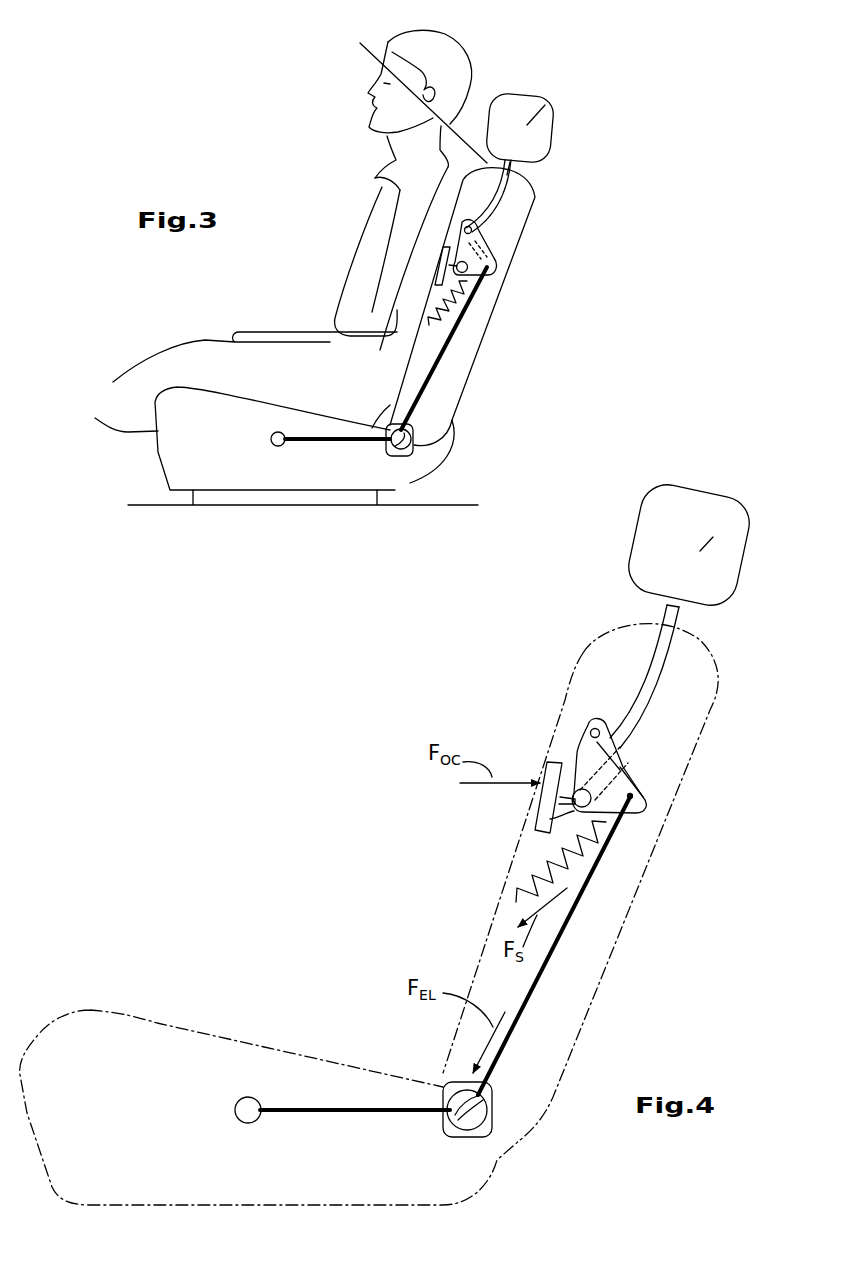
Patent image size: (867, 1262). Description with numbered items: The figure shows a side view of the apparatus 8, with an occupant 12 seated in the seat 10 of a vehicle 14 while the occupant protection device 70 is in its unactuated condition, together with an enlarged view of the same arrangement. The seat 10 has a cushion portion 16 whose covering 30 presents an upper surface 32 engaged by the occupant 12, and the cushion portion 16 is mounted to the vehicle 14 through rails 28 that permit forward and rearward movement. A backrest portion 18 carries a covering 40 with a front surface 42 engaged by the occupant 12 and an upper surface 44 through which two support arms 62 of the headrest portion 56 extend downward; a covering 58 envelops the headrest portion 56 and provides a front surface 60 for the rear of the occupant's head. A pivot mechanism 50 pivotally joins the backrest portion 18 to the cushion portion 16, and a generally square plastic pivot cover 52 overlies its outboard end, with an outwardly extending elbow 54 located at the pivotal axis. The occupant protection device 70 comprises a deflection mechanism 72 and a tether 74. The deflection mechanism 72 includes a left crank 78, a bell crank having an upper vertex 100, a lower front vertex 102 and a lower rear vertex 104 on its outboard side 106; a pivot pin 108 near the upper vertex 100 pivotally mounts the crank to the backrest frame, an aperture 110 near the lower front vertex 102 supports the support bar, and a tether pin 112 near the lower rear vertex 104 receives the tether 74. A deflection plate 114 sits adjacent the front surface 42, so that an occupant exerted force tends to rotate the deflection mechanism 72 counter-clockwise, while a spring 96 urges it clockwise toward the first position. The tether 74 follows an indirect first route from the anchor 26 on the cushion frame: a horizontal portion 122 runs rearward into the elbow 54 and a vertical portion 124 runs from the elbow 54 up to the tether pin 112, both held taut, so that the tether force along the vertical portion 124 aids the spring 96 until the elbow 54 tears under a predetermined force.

In FIG. 3, the apparatus 8 is at (626, 141).
In FIG. 4, the apparatus 8 is at (351, 695).
In FIG. 3, the seat 10 is at (566, 215).
In FIG. 4, the seat 10 is at (398, 777).
In FIG. 3, the occupant 12 is at (375, 185).
In FIG. 3, the vehicle 14 is at (450, 500).
In FIG. 3, the cushion portion 16 is at (188, 433).
In FIG. 4, the cushion portion 16 is at (158, 1067).
In FIG. 3, the backrest portion 18 is at (519, 252).
In FIG. 4, the backrest portion 18 is at (623, 705).
In FIG. 3, the anchor 26 is at (272, 446).
In FIG. 4, the anchor 26 is at (240, 1116).
In FIG. 3, the rails 28 is at (293, 500).
In FIG. 3, the covering 30 is at (150, 432).
In FIG. 4, the covering 30 is at (53, 1017).
In FIG. 3, the upper surface 32 is at (229, 393).
In FIG. 4, the upper surface 32 is at (247, 1037).
In FIG. 3, the covering 40 is at (540, 186).
In FIG. 4, the covering 40 is at (483, 947).
In FIG. 3, the front surface 42 is at (392, 362).
In FIG. 4, the front surface 42 is at (510, 848).
In FIG. 3, the upper surface 44 is at (403, 94).
In FIG. 4, the upper surface 44 is at (647, 622).
In FIG. 3, the pivot mechanism 50 is at (413, 453).
In FIG. 4, the pivot mechanism 50 is at (492, 1128).
In FIG. 3, the plastic pivot cover 52 is at (400, 458).
In FIG. 4, the plastic pivot cover 52 is at (458, 1140).
In FIG. 3, the elbow 54 is at (413, 433).
In FIG. 4, the elbow 54 is at (492, 1110).
In FIG. 3, the headrest portion 56 is at (546, 110).
In FIG. 4, the headrest portion 56 is at (713, 537).
In FIG. 3, the covering 58 is at (527, 125).
In FIG. 4, the covering 58 is at (694, 485).
In FIG. 3, the front surface 60 is at (488, 108).
In FIG. 4, the front surface 60 is at (637, 530).
In FIG. 3, the support arms 62 is at (500, 208).
In FIG. 4, the support arms 62 is at (665, 663).
In FIG. 3, the occupant protection device 70 is at (577, 355).
In FIG. 4, the occupant protection device 70 is at (690, 803).
In FIG. 3, the deflection mechanism 72 is at (497, 283).
In FIG. 3, the tether 74 is at (470, 345).
In FIG. 3, the left crank 78 is at (470, 219).
In FIG. 4, the left crank 78 is at (576, 744).
In FIG. 3, the spring 96 is at (430, 288).
In FIG. 4, the spring 96 is at (518, 877).
In FIG. 4, the upper vertex 100 is at (596, 712).
In FIG. 4, the lower front vertex 102 is at (538, 821).
In FIG. 4, the lower rear vertex 104 is at (647, 802).
In FIG. 4, the outboard side 106 is at (597, 756).
In FIG. 4, the pivot pin 108 is at (580, 737).
In FIG. 4, the aperture 110 is at (573, 791).
In FIG. 4, the tether pin 112 is at (641, 803).
In FIG. 3, the deflection plate 114 is at (436, 252).
In FIG. 4, the deflection plate 114 is at (544, 768).
In FIG. 4, the horizontal portion 122 is at (312, 1112).
In FIG. 4, the vertical portion 124 is at (538, 990).